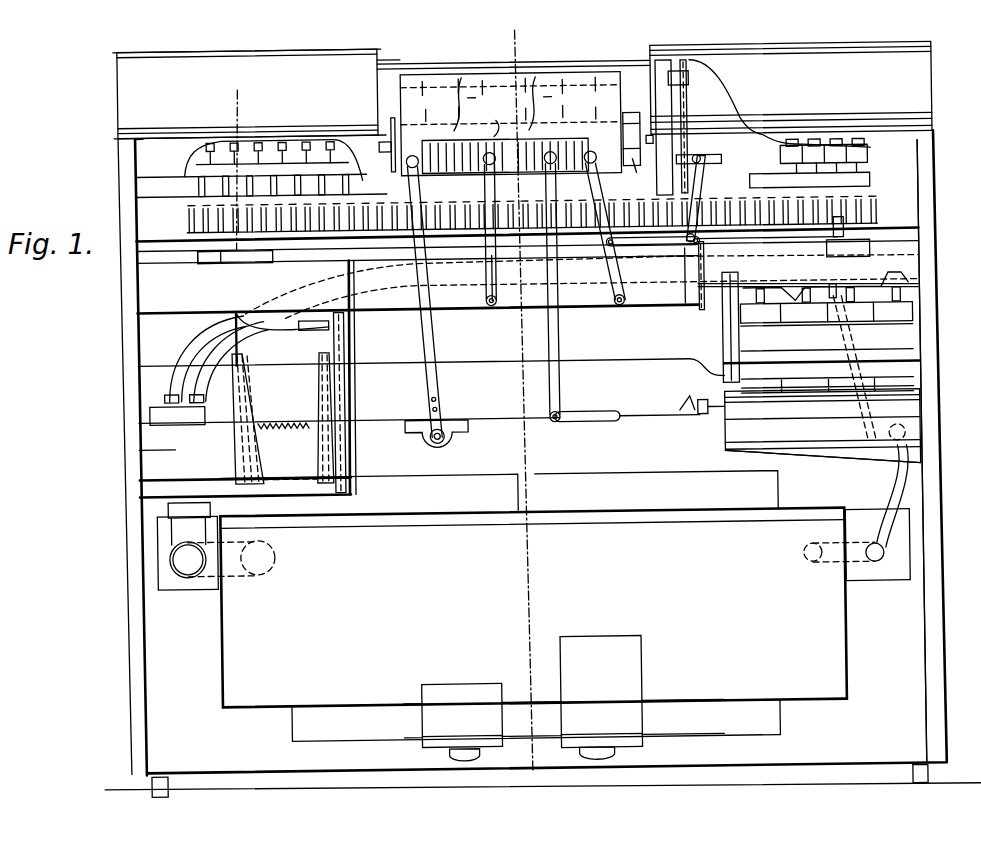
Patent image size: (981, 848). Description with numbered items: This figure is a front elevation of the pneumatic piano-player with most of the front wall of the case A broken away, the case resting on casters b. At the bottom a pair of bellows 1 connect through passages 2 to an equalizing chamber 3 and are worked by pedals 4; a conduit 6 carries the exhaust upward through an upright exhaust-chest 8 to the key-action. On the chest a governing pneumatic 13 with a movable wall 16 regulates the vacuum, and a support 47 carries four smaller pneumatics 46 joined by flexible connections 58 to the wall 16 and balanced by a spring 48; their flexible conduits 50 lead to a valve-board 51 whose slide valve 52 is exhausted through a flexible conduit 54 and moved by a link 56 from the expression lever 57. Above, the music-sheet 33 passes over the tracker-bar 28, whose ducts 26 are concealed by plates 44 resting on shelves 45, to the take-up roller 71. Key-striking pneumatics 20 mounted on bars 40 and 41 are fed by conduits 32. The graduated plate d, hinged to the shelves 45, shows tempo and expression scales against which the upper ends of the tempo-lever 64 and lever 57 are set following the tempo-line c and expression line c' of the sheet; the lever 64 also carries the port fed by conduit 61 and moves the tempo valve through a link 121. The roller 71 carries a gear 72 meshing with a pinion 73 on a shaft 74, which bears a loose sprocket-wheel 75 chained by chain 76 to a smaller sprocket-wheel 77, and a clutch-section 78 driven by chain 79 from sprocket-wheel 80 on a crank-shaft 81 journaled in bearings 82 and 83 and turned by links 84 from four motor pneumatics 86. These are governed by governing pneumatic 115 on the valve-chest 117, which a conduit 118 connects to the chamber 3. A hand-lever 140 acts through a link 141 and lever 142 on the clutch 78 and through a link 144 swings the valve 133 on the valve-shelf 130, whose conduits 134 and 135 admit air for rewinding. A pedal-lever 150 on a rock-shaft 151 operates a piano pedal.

The case A is at (122, 168).
The casters b is at (940, 779).
The tempo-line c is at (542, 99).
The expression line c' is at (465, 99).
The graduated plate d is at (491, 118).
The bellows 1 is at (499, 494).
The passages 2 is at (532, 45).
The equalizing chamber 3 is at (250, 101).
The pedals 4 is at (564, 698).
The conduit 6 is at (196, 525).
The exhaust-chest 8 is at (139, 438).
The governing pneumatic 13 is at (256, 462).
The movable wall 16 is at (252, 448).
The key-striking pneumatics 20 is at (318, 138).
The ducts 26 is at (205, 207).
The tracker-bar 28 is at (392, 74).
The conduits 32 is at (200, 183).
The music-sheet 33 is at (570, 90).
The support bar 40 is at (198, 170).
The support bar 41 is at (139, 194).
The plates 44 is at (636, 100).
The shelves 45 is at (390, 156).
The smaller pneumatics 46 is at (333, 462).
The support 47 is at (346, 343).
The spring 48 is at (282, 420).
The flexible conduit 50 is at (312, 327).
The valve-board 51 is at (265, 255).
The slide valve 52 is at (215, 255).
The flexible conduit 54 is at (195, 340).
The link 56 is at (345, 262).
The lever 57 is at (488, 280).
The flexible connection 58 is at (289, 468).
The conduit 61 is at (239, 335).
The tempo-lever 64 is at (558, 339).
The take-up roller 71 is at (395, 118).
The gear 72 is at (631, 124).
The pinion 73 is at (646, 172).
The shaft 74 is at (726, 161).
The sprocket-wheel 75 is at (691, 158).
The chain 76 is at (686, 124).
The sprocket-wheel 77 is at (700, 94).
The clutch-section 78 is at (704, 158).
The chain 79 is at (702, 268).
The sprocket-wheel 80 is at (708, 310).
The crank-shaft 81 is at (800, 296).
The bearing 82 is at (762, 290).
The bearing 83 is at (912, 292).
The links 84 is at (800, 298).
The motor pneumatics 86 is at (826, 312).
The governing pneumatic 115 is at (832, 460).
The valve-chest 117 is at (730, 418).
The conduit 118 is at (896, 488).
The link 121 is at (686, 410).
The valve-shelf 130 is at (872, 250).
The valve 133 is at (852, 240).
The flexible conduit 134 is at (840, 292).
The conduit 135 is at (240, 310).
The hand-lever 140 is at (613, 273).
The link 141 is at (658, 250).
The lever 142 is at (702, 200).
The link 144 is at (767, 239).
The pedal-lever 150 is at (430, 337).
The rock-shaft 151 is at (446, 440).